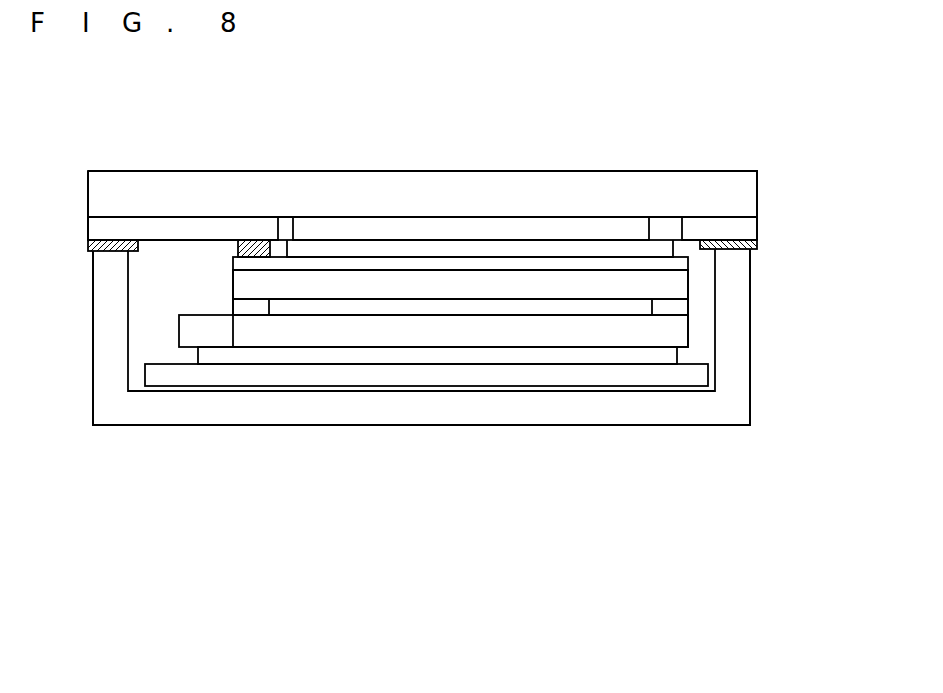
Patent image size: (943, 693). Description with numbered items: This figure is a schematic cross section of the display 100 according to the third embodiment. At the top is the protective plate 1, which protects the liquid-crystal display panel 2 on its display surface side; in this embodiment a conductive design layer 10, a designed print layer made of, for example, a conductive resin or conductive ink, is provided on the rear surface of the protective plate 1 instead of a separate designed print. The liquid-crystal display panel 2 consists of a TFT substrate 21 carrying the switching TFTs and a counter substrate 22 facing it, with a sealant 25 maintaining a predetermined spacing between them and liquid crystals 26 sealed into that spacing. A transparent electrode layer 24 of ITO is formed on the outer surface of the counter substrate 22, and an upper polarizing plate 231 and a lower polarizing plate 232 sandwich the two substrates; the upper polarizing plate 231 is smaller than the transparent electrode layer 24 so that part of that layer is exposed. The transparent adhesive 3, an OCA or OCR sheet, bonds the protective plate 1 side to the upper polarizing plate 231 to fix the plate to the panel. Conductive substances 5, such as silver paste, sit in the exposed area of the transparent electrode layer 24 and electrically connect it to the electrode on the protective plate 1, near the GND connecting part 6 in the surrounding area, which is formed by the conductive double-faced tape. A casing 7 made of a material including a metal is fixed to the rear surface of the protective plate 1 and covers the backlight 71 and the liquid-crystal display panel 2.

The protective plate 1 is at (745, 192).
The conductive design layer 10 is at (178, 228).
The transparent adhesive 3 is at (561, 232).
The conductive substance 5 is at (257, 239).
The GND connecting part 6 is at (88, 243).
The casing 7 is at (737, 404).
The transparent electrode layer 24 is at (411, 263).
The upper polarizing plate 231 is at (493, 248).
The liquid-crystal display panel 2 is at (806, 272).
The counter substrate 22 is at (677, 284).
The TFT substrate 21 is at (677, 332).
The sealant 25 is at (245, 305).
The liquid crystals 26 is at (337, 305).
The lower polarizing plate 232 is at (619, 353).
The backlight 71 is at (530, 372).
The display 100 is at (302, 452).